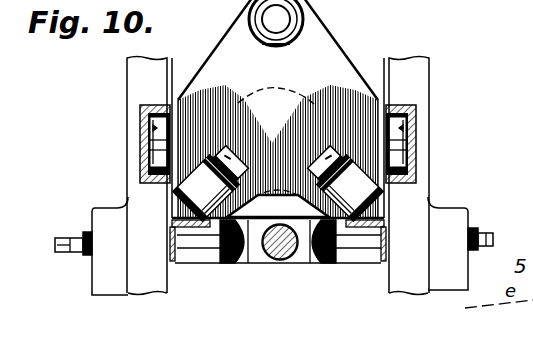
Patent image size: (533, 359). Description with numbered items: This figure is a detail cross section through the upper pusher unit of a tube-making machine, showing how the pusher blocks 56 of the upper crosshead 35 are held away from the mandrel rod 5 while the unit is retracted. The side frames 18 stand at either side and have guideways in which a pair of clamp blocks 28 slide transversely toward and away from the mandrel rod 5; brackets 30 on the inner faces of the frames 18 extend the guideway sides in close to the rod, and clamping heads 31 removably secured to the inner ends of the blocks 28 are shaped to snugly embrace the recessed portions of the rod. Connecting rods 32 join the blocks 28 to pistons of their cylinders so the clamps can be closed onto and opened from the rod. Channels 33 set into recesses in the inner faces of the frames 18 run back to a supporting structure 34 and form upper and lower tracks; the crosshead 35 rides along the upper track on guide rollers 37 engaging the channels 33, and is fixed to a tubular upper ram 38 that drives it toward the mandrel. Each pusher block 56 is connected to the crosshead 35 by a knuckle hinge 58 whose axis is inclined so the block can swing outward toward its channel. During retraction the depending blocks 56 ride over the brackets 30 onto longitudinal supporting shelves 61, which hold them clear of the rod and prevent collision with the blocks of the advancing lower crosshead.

The mandrel rod 5 is at (287, 243).
The side frames 18 is at (127, 78).
The clamp blocks 28 is at (240, 267).
The brackets 30 is at (190, 266).
The clamping heads 31 is at (276, 265).
The connecting rods 32 is at (67, 257).
The channels 33 is at (146, 169).
The supporting structure 34 is at (487, 232).
The crosshead 35 is at (348, 50).
The guide rollers 37 is at (143, 132).
The upper ram 38 is at (262, 91).
The pusher blocks 56 is at (228, 87).
The knuckle hinge 58 is at (250, 130).
The supporting shelves 61 is at (172, 230).